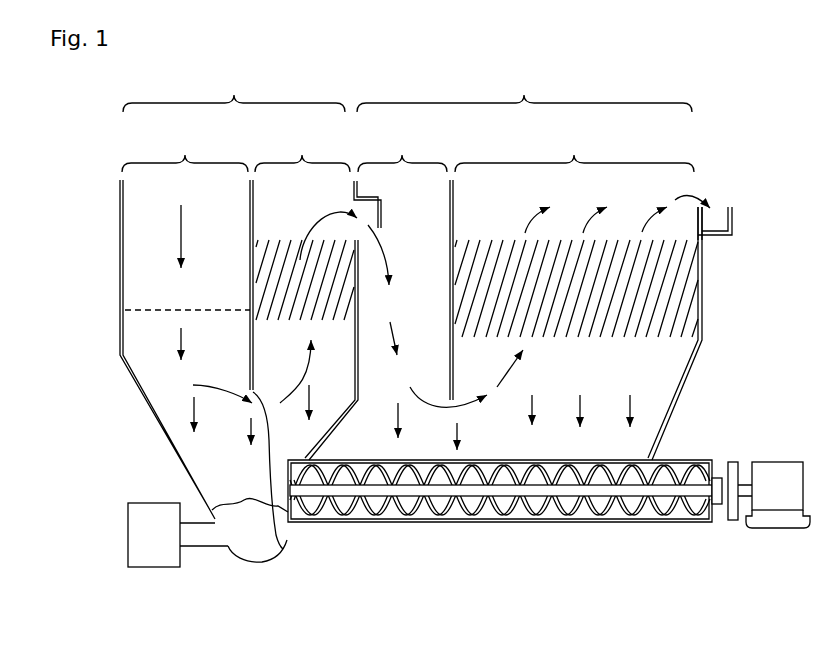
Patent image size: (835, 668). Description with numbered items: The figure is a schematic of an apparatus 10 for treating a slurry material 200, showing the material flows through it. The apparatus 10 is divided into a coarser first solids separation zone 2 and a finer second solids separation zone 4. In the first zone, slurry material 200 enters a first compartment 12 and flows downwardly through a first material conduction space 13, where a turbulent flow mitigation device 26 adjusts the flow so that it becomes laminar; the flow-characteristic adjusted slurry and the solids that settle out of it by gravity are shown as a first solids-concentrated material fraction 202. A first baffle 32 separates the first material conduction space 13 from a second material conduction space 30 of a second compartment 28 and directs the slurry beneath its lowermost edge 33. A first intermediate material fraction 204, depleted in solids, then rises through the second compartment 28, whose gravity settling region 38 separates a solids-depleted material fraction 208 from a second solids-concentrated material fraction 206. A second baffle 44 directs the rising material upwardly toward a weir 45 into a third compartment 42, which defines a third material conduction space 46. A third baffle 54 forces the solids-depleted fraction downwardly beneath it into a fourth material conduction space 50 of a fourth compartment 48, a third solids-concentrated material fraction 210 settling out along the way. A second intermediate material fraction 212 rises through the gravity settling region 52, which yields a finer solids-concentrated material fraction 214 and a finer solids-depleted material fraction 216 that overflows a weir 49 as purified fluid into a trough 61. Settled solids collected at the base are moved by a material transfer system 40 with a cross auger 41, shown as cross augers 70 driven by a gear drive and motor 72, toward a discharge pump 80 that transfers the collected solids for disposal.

The apparatus 10 is at (681, 80).
The first solids separation zone 2 is at (234, 93).
The second solids separation zone 4 is at (524, 93).
The first compartment 12 is at (185, 153).
The first material conduction space 13 is at (133, 272).
The turbulent flow mitigation device 26 is at (151, 314).
The second compartment 28 is at (302, 153).
The second material conduction space 30 is at (343, 349).
The first baffle 32 is at (249, 336).
The lowermost edge 33 is at (283, 549).
The gravity settling region 38 is at (285, 258).
The material transfer system 40 is at (643, 535).
The cross auger 41 is at (588, 512).
The third compartment 42 is at (402, 153).
The second baffle 44 is at (357, 316).
The weir 45 is at (379, 214).
The third material conduction space 46 is at (431, 341).
The fourth compartment 48 is at (574, 183).
The weir 49 is at (697, 213).
The fourth material conduction space 50 is at (653, 364).
The gravity settling region 52 is at (495, 248).
The third baffle 54 is at (449, 275).
The trough 61 is at (717, 237).
The cross augers 70 is at (527, 508).
The gear drive and motor 72 is at (778, 530).
The discharge pump 80 is at (153, 560).
The slurry material 200 is at (181, 233).
The first solids-concentrated material fraction 202 is at (193, 403).
The first intermediate material fraction 204 is at (311, 365).
The second solids-concentrated material fraction 206 is at (309, 403).
The solids-depleted material fraction 208 is at (334, 212).
The third solids-concentrated material fraction 210 is at (398, 408).
The second intermediate material fraction 212 is at (510, 377).
The finer solids-concentrated material fraction 214 is at (533, 403).
The finer solids-depleted material fraction 216 is at (708, 200).